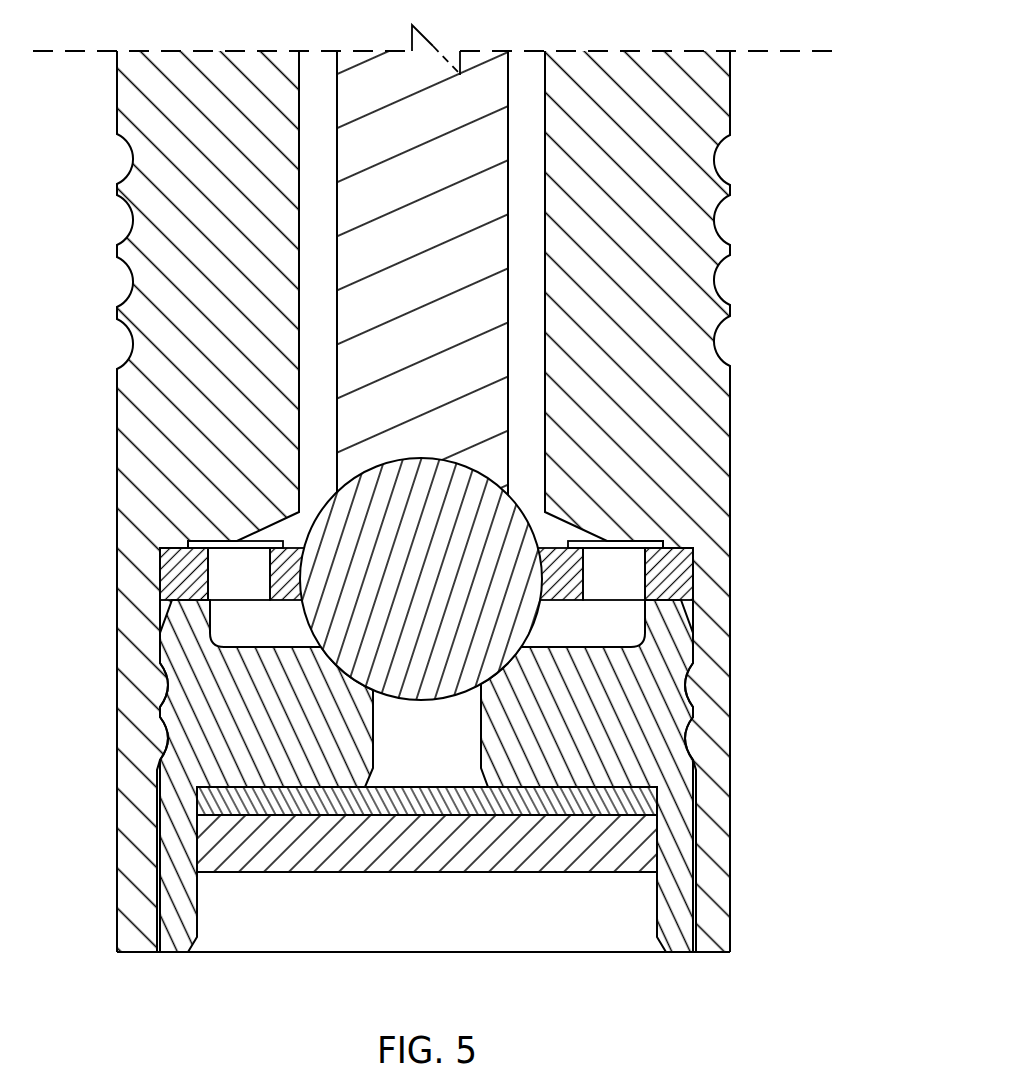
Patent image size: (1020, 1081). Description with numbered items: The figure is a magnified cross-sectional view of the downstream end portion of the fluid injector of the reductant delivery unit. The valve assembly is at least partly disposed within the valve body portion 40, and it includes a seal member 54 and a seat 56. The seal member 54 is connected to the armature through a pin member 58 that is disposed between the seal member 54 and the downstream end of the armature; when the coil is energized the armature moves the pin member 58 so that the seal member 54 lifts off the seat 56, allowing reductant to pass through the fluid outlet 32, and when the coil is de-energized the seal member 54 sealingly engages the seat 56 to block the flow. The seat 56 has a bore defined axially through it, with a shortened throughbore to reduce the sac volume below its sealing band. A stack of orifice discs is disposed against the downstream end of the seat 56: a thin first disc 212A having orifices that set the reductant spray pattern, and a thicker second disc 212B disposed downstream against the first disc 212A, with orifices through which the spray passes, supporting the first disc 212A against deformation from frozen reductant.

The valve body portion 40 is at (156, 455).
The pin member 58 is at (355, 287).
The seal member 54 is at (370, 633).
The seat 56 is at (622, 702).
The first disc 212A is at (633, 802).
The second disc 212B is at (610, 853).
The fluid outlet 32 is at (525, 878).